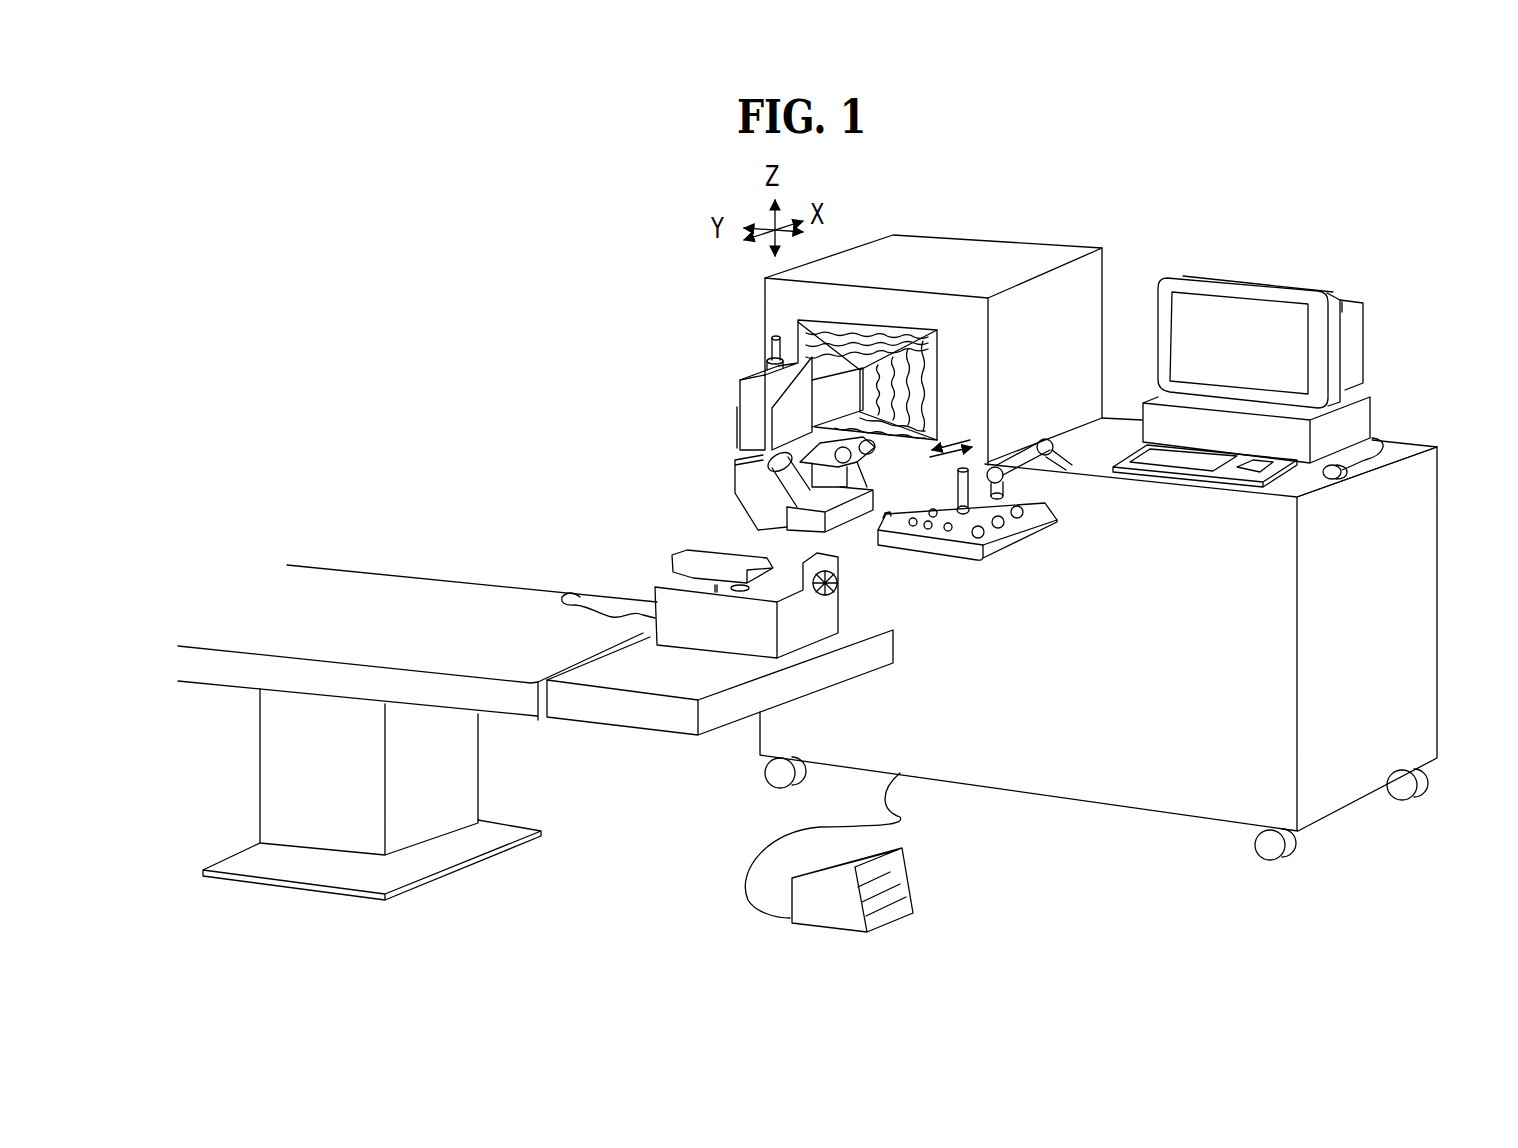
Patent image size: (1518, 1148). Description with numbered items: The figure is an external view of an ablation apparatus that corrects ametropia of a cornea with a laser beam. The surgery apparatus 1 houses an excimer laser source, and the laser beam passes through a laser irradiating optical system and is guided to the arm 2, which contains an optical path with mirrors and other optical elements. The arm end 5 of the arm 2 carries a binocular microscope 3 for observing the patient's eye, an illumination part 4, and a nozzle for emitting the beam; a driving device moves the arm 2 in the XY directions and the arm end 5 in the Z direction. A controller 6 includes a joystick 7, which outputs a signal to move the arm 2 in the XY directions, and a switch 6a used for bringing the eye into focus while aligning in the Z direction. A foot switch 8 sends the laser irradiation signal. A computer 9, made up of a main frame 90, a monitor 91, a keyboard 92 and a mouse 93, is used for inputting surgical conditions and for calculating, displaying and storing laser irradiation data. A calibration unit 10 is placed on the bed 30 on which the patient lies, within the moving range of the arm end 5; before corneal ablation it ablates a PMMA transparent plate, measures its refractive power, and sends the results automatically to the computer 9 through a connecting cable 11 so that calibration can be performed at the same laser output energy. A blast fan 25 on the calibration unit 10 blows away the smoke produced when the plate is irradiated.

The surgery apparatus 1 is at (1195, 773).
The arm 2 is at (827, 373).
The binocular microscope 3 is at (742, 467).
The illumination part 4 is at (760, 497).
The arm end 5 is at (722, 401).
The controller 6 is at (1048, 513).
The switch 6a is at (890, 516).
The joystick 7 is at (972, 482).
The foot switch 8 is at (893, 875).
The computer 9 is at (1292, 361).
The calibration unit 10 is at (717, 595).
The connecting cable 11 is at (580, 597).
The blast fan 25 is at (812, 603).
The bed 30 is at (337, 512).
The main frame 90 is at (1340, 425).
The monitor 91 is at (1262, 326).
The keyboard 92 is at (1212, 463).
The mouse 93 is at (1333, 478).